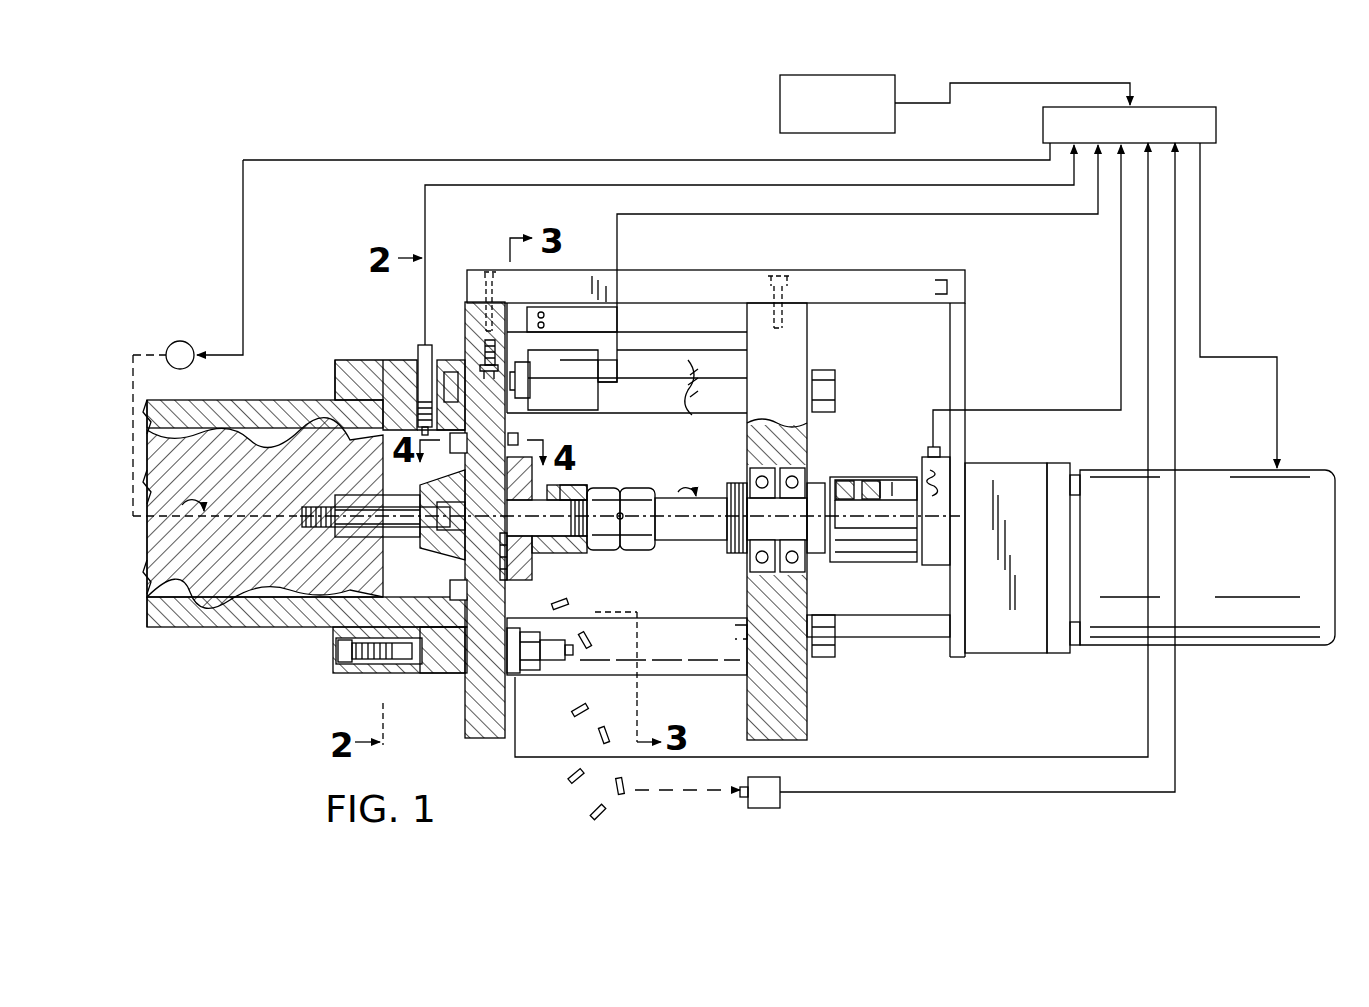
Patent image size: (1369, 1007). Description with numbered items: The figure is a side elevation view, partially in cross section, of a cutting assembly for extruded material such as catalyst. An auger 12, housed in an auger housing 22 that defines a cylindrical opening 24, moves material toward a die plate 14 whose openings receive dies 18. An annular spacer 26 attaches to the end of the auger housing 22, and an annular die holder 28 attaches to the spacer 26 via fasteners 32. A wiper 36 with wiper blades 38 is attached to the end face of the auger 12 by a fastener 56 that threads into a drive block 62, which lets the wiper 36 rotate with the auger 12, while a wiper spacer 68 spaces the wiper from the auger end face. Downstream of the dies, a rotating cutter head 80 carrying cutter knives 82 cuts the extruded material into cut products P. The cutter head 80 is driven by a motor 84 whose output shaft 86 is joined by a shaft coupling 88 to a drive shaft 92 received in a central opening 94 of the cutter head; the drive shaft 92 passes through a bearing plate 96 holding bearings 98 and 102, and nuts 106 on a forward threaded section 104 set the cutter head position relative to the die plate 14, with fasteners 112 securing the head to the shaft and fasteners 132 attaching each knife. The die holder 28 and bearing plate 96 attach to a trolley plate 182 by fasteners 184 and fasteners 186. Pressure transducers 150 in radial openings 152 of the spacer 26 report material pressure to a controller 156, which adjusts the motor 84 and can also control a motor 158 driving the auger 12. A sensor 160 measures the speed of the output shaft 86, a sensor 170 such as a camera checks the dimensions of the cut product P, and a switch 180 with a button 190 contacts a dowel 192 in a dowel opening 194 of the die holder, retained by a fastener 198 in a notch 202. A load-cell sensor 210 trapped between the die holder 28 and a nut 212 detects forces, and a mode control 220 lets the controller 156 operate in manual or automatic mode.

The auger 12 is at (192, 612).
The die plate 14 is at (578, 540).
The dies 18 is at (473, 615).
The auger housing 22 is at (237, 627).
The cylindrical opening 24 is at (245, 600).
The annular spacer 26 is at (398, 378).
The annular die holder 28 is at (482, 738).
The fasteners 32 is at (422, 668).
The wiper 36 is at (418, 565).
The wiper blades 38 is at (390, 662).
The fastener 56 is at (372, 498).
The drive block 62 is at (363, 545).
The wiper spacer 68 is at (350, 455).
The cutter head 80 is at (522, 443).
The cutter knives 82 is at (512, 432).
The motor 84 is at (1245, 632).
The output shaft 86 is at (902, 528).
The shaft coupling 88 is at (868, 555).
The drive shaft 92 is at (690, 540).
The central opening 94 is at (592, 532).
The bearing plate 96 is at (800, 710).
The bearing 98 is at (803, 464).
The bearing 102 is at (752, 462).
The forward threaded section 104 is at (672, 498).
The nuts 106 is at (630, 490).
The fasteners 112 is at (596, 498).
The fasteners 132 is at (515, 560).
The pressure transducers 150 is at (418, 358).
The radial openings 152 is at (398, 362).
The controller 156 is at (1216, 122).
The motor 158 is at (180, 340).
The sensor 160 is at (920, 457).
The sensor 170 is at (770, 800).
The switch 180 is at (590, 397).
The trolley plate 182 is at (738, 280).
The fasteners 184 is at (490, 270).
The fasteners 186 is at (782, 292).
The button 190 is at (598, 373).
The dowel 192 is at (550, 326).
The dowel opening 194 is at (456, 373).
The fastener 198 is at (490, 365).
The notch 202 is at (487, 370).
The sensor 210 is at (523, 675).
The nut 212 is at (545, 662).
The mode control 220 is at (780, 103).
The cut products P is at (568, 604).